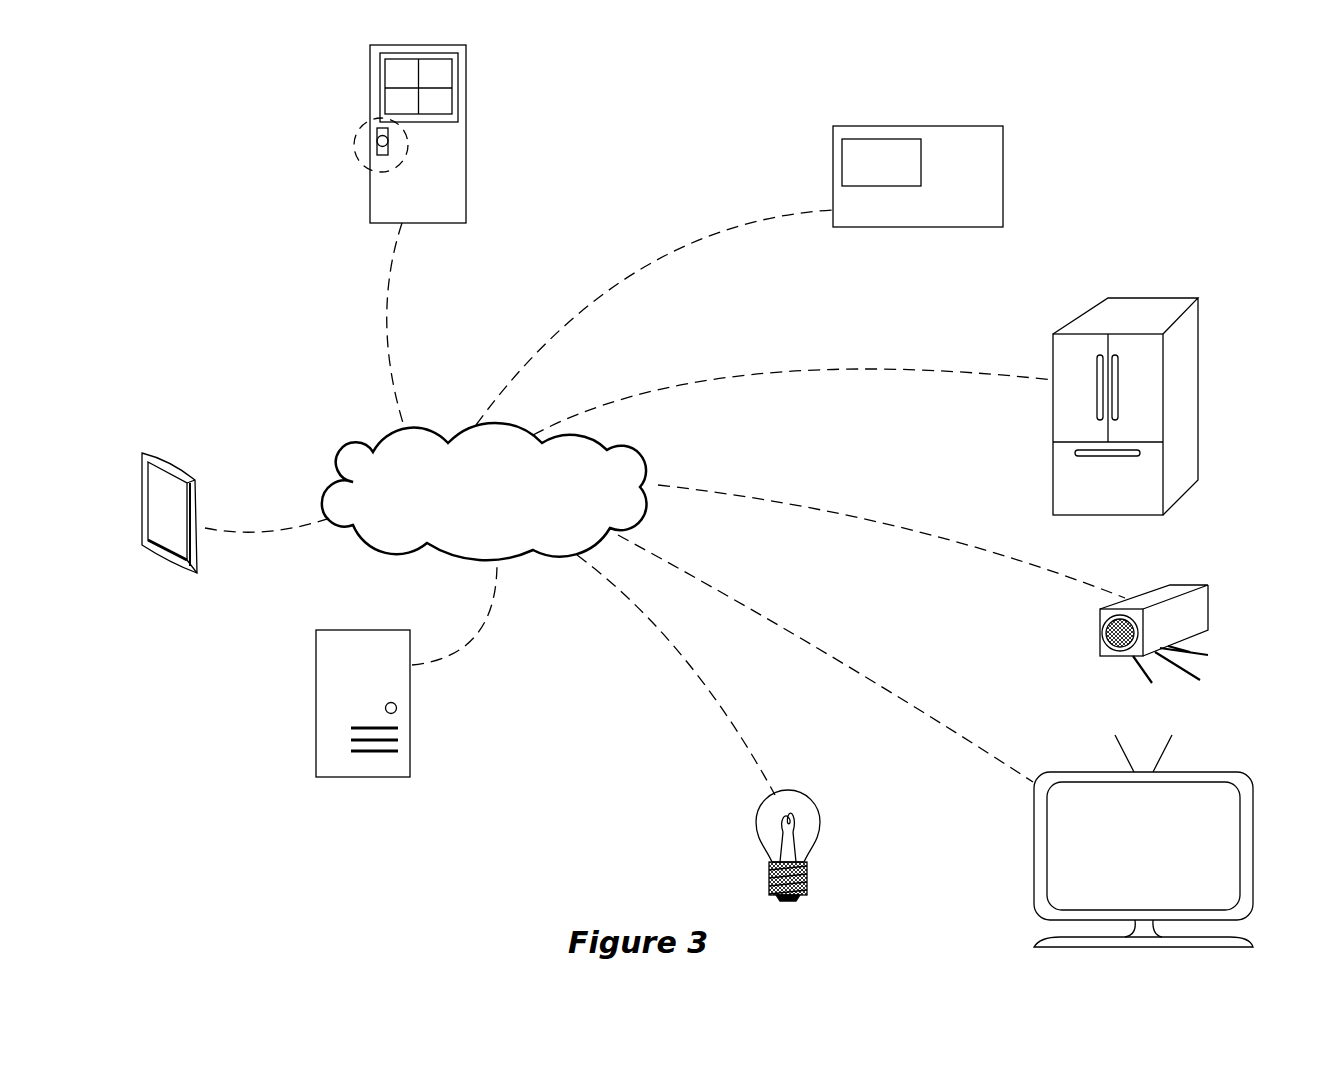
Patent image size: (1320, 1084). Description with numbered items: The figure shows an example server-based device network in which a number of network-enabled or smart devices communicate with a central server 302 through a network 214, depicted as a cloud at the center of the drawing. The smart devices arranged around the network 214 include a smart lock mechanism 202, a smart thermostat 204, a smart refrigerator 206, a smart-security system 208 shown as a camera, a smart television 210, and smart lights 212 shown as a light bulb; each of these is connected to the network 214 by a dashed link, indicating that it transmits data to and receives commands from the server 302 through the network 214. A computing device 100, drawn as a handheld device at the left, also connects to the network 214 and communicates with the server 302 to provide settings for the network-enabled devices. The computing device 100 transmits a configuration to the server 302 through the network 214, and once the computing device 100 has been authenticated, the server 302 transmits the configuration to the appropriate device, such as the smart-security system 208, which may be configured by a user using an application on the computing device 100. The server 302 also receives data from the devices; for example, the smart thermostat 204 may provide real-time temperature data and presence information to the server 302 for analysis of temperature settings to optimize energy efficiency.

The computing device 100 is at (142, 547).
The smart lock mechanism 202 is at (353, 141).
The smart thermostat 204 is at (952, 233).
The smart refrigerator 206 is at (1200, 362).
The smart-security system 208 is at (1212, 597).
The smart television 210 is at (1255, 838).
The smart lights 212 is at (818, 813).
The network 214 is at (508, 517).
The server 302 is at (313, 715).